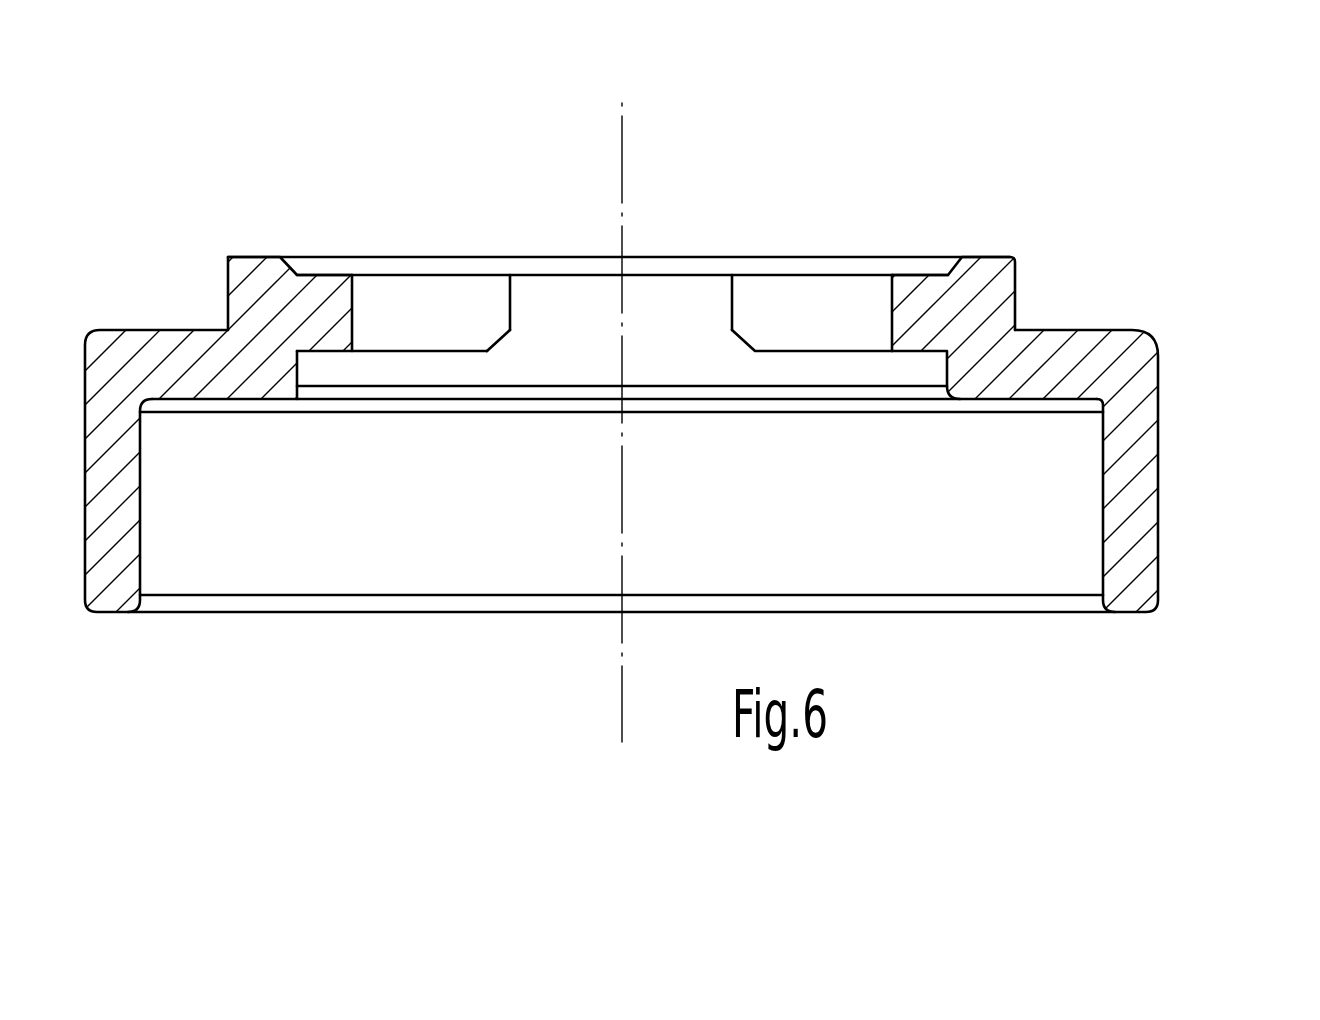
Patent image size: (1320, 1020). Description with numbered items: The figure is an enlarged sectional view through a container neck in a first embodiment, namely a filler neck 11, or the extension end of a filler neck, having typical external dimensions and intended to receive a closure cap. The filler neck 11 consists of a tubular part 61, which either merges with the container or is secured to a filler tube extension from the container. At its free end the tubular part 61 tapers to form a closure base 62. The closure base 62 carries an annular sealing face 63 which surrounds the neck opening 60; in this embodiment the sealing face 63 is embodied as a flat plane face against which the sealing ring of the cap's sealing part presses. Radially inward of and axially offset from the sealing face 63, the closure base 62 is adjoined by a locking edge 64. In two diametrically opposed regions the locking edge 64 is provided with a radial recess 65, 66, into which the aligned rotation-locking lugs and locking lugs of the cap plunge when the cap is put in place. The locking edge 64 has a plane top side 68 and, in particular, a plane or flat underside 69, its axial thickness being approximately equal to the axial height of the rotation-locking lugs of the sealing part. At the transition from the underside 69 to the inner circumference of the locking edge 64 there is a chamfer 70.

The filler neck 11 is at (660, 475).
The neck opening 60 is at (592, 342).
The tubular part 61 is at (1123, 393).
The closure base 62 is at (822, 354).
The annular sealing face 63 is at (983, 247).
The locking edge 64 is at (329, 307).
The radial recess 65 is at (425, 317).
The radial recess 66 is at (800, 317).
The plane top side 68 is at (925, 266).
The flat underside 69 is at (907, 358).
The chamfer 70 is at (500, 340).